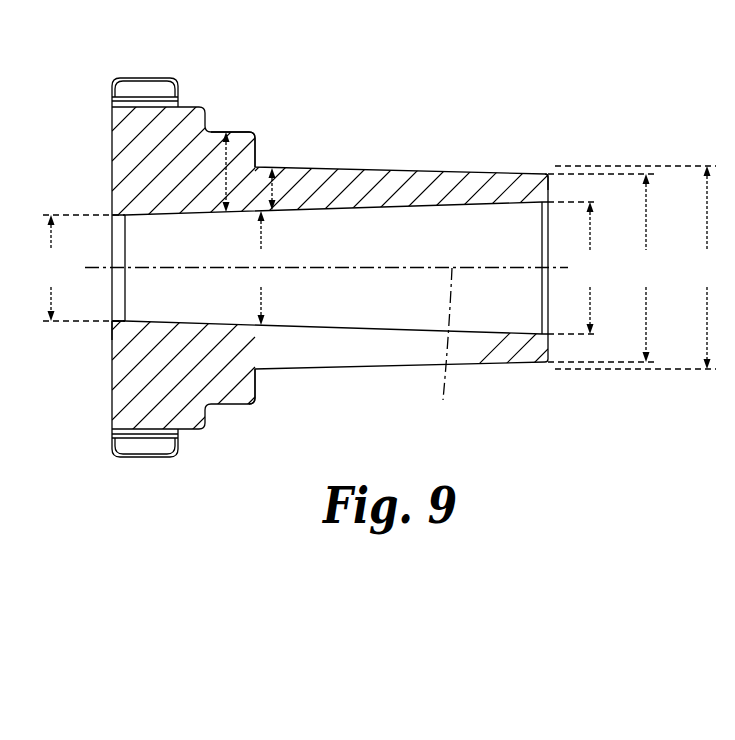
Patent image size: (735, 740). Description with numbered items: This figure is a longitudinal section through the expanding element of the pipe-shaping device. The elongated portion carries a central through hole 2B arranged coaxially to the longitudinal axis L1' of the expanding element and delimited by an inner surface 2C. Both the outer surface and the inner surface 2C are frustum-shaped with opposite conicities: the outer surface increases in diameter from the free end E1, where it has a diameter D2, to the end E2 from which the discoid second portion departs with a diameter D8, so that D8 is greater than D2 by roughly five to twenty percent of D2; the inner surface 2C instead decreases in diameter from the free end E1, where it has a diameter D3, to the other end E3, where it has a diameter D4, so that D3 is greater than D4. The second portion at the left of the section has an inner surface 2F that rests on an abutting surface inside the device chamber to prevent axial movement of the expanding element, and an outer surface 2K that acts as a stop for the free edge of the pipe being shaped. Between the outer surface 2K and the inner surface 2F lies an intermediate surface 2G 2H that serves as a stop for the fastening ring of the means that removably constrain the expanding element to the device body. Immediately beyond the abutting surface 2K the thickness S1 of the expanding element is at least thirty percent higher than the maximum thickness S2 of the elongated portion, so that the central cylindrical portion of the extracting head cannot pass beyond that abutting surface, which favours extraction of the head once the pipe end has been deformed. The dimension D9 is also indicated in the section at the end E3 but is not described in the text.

The central through hole 2B is at (422, 252).
The inner surface 2C is at (523, 317).
The inner surface 2F is at (110, 386).
The intermediate surface 2G is at (178, 92).
The intermediate surface 2H is at (207, 120).
The outer surface 2K is at (261, 164).
The free end E1 is at (549, 188).
The end E2 is at (258, 378).
The other end E3 is at (110, 324).
The thickness S1 is at (224, 175).
The maximum thickness S2 is at (276, 188).
The bore diameter at flange end D9 is at (80, 268).
The diameter D4 is at (260, 268).
The diameter D3 is at (576, 268).
The diameter D2 is at (605, 268).
The diameter D8 is at (639, 267).
The longitudinal axis L1' is at (445, 353).